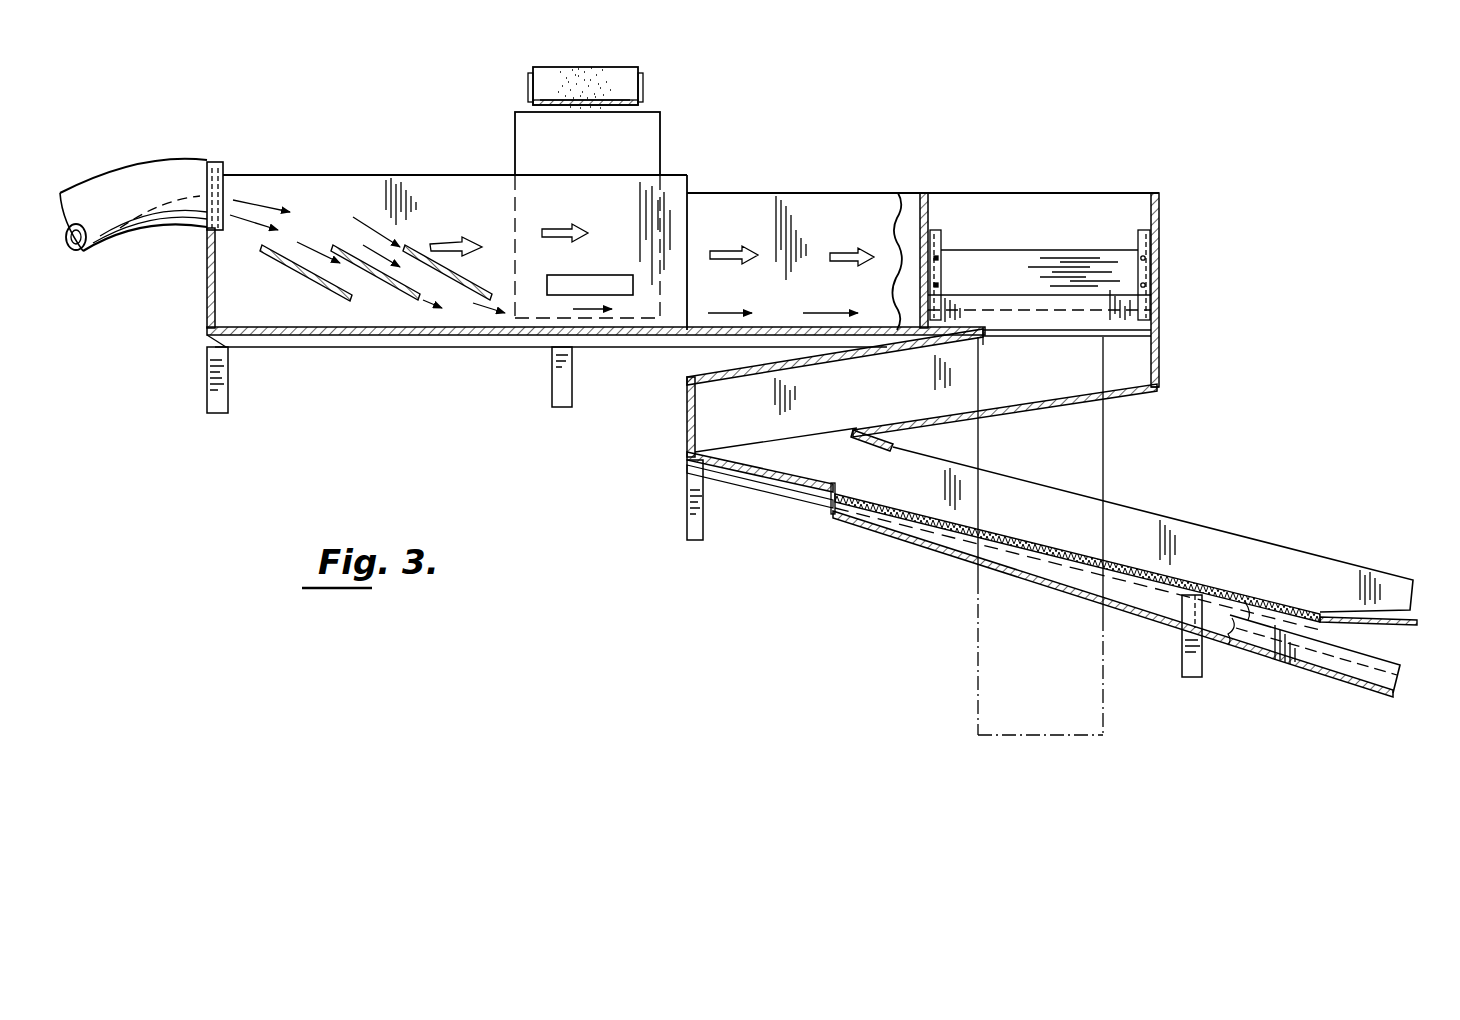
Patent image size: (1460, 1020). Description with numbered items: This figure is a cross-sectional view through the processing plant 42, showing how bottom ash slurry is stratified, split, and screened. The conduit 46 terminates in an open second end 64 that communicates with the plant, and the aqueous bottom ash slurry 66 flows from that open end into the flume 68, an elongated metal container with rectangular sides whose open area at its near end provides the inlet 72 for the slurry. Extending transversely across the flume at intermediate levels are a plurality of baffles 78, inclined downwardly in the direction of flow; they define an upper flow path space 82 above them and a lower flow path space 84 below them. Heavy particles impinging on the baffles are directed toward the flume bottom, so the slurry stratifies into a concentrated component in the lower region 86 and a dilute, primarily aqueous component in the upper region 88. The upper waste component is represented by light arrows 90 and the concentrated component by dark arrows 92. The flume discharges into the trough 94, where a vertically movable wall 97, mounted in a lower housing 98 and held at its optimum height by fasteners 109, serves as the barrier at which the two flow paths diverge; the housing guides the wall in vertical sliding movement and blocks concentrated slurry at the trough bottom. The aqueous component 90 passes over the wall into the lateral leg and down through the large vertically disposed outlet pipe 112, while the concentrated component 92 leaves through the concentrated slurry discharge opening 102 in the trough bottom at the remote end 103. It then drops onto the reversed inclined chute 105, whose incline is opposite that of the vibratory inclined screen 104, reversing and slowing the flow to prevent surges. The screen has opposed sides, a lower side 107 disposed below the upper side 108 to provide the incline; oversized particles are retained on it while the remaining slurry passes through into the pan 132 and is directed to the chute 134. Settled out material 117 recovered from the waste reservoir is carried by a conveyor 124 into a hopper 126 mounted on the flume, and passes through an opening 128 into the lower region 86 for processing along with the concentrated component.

The processing plant 42 is at (462, 165).
The conduit 46 is at (126, 168).
The second end of conduit 64 is at (226, 163).
The aqueous bottom ash slurry 66 is at (257, 220).
The flume 68 is at (382, 197).
The inlet 72 is at (264, 295).
The baffles 78 is at (337, 247).
The upper flow path space 82 is at (444, 232).
The lower flow path space 84 is at (456, 303).
The lower region of flume 86 is at (689, 230).
The upper region of flume 88 is at (688, 190).
The upper waste slurry component 90 is at (566, 232).
The concentrated slurry component 92 is at (815, 313).
The trough 94 is at (1161, 220).
The vertically movable wall 97 is at (1021, 258).
The lower housing 98 is at (1010, 298).
The concentrated slurry discharge opening 102 is at (1010, 336).
The end of main portion of trough 103 is at (1160, 328).
The vibratory inclined screen 104 is at (916, 503).
The reversed inclined chute 105 is at (922, 393).
The lower side of screen 107 is at (1307, 607).
The upper side of screen 108 is at (745, 462).
The fasteners 109 is at (941, 256).
The outlet pipe 112 is at (1085, 418).
The settled out material 117 is at (590, 64).
The conveyor 124 is at (552, 90).
The hopper 126 is at (530, 147).
The opening 128 is at (596, 278).
The pan 132 is at (862, 526).
The chute 134 is at (1332, 678).